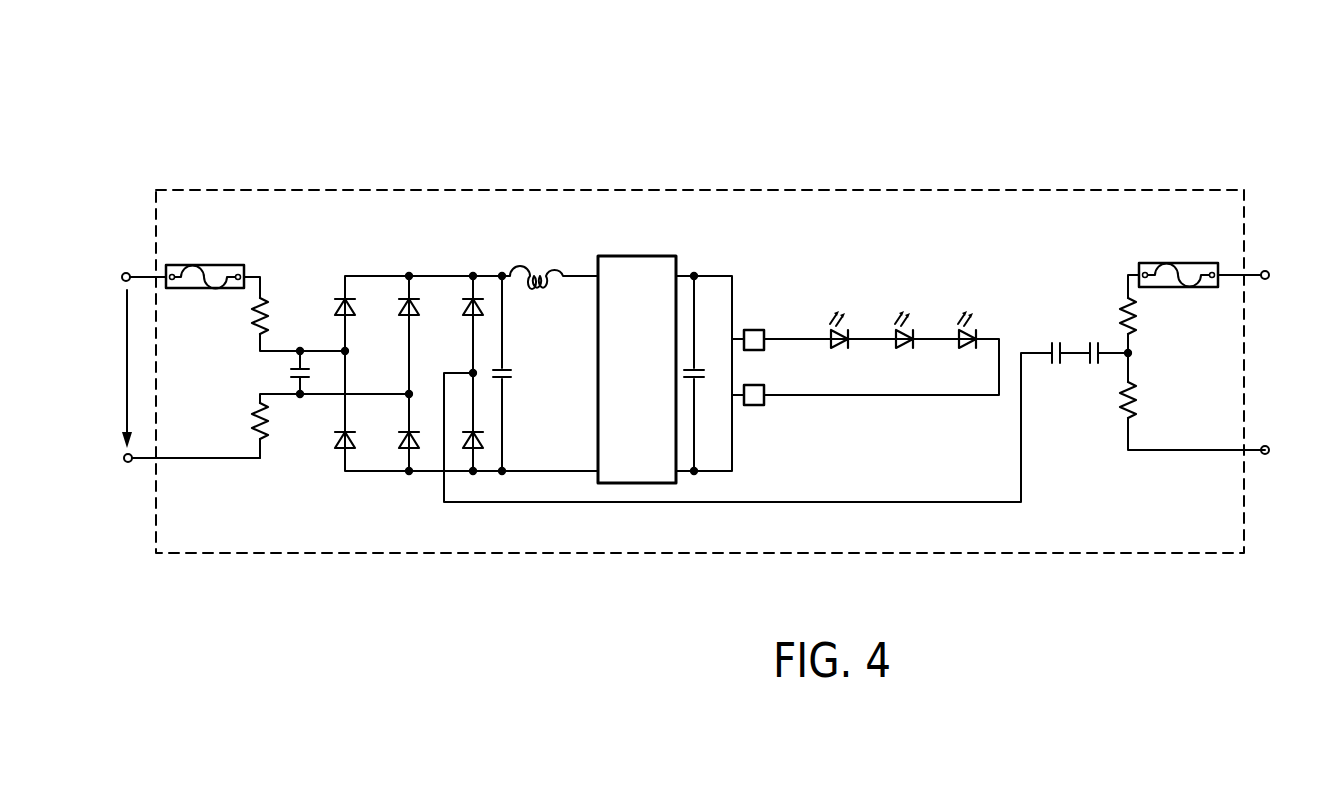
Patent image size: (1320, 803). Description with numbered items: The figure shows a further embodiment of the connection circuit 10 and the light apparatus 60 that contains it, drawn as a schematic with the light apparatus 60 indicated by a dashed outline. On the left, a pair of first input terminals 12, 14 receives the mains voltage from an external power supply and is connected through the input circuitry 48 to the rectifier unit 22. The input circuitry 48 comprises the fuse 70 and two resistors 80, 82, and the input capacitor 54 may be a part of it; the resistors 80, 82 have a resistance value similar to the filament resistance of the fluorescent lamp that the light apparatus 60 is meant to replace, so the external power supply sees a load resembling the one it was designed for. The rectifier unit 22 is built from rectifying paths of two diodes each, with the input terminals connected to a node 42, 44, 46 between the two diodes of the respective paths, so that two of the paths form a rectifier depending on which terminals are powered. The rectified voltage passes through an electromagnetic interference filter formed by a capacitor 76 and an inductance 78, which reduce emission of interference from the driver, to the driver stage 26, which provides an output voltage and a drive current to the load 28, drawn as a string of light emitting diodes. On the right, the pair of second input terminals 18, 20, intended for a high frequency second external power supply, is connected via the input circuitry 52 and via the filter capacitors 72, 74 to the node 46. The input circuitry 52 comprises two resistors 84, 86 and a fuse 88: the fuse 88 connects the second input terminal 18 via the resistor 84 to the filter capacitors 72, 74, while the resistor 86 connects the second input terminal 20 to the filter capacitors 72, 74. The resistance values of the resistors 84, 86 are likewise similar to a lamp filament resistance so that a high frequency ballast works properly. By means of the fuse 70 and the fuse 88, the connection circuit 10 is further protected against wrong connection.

The connection circuit 10 is at (270, 135).
The first input terminal 12 is at (124, 273).
The first input terminal 14 is at (128, 462).
The second input terminal 18 is at (1265, 271).
The second input terminal 20 is at (1266, 454).
The rectifier unit 22 is at (392, 495).
The driver stage 26 is at (640, 268).
The load 28 is at (899, 290).
The node 42 is at (346, 352).
The node 44 is at (410, 393).
The node 46 is at (472, 372).
The input circuitry 48 is at (215, 246).
The input circuitry 52 is at (1163, 238).
The input capacitor 54 is at (292, 375).
The light apparatus 60 is at (945, 142).
The fuse 70 is at (184, 262).
The filter capacitor 72 is at (1058, 342).
The filter capacitor 74 is at (1092, 364).
The capacitor 76 is at (505, 376).
The inductance 78 is at (534, 270).
The resistor 80 is at (268, 312).
The resistor 82 is at (258, 428).
The resistor 84 is at (1134, 316).
The resistor 86 is at (1134, 398).
The fuse 88 is at (1200, 286).